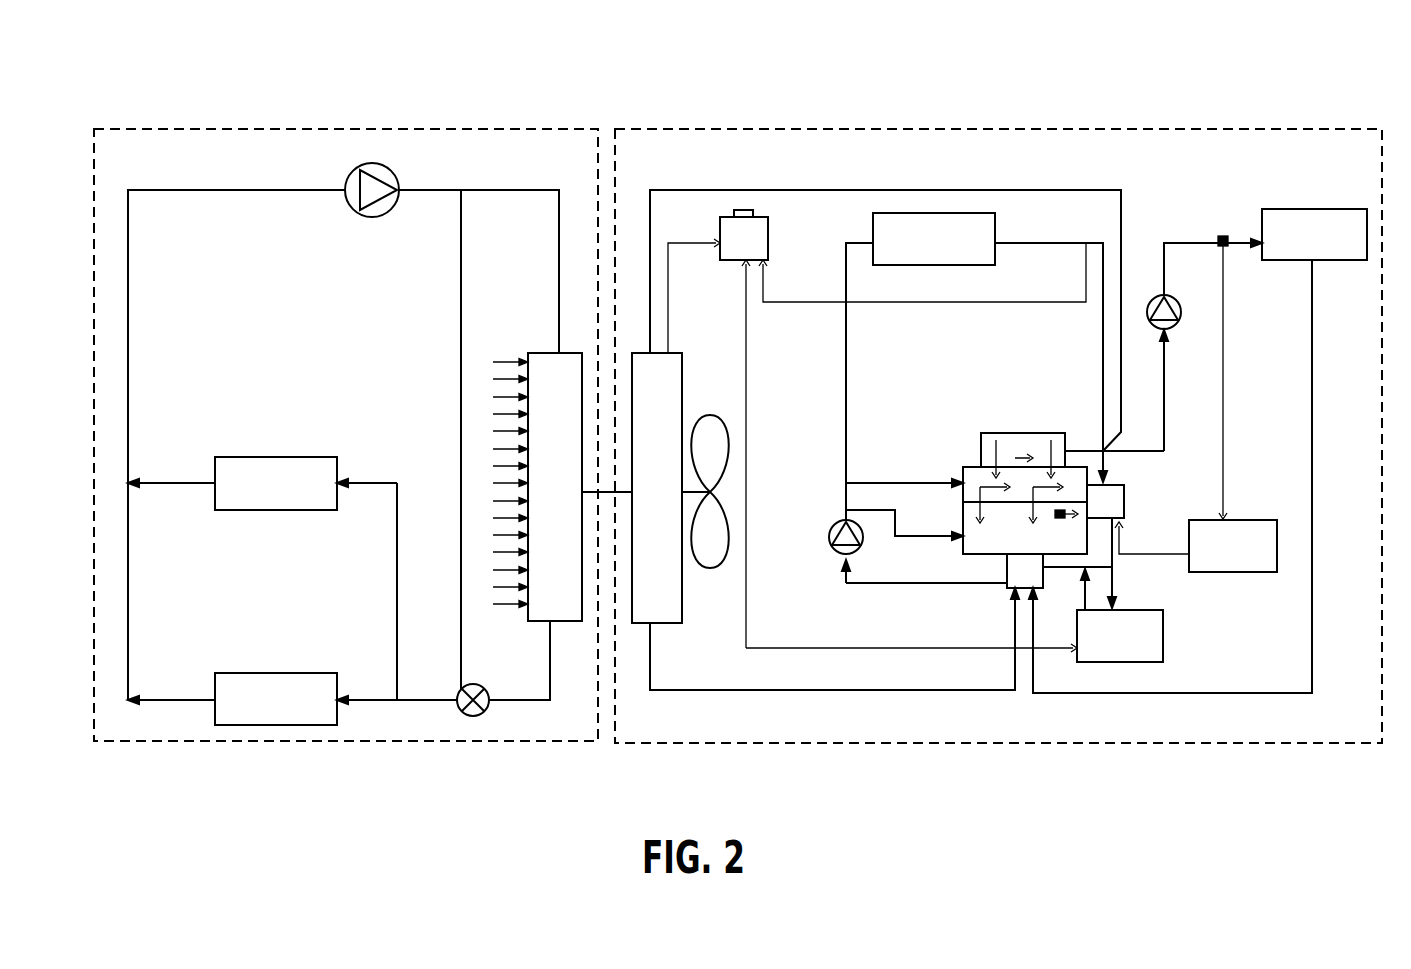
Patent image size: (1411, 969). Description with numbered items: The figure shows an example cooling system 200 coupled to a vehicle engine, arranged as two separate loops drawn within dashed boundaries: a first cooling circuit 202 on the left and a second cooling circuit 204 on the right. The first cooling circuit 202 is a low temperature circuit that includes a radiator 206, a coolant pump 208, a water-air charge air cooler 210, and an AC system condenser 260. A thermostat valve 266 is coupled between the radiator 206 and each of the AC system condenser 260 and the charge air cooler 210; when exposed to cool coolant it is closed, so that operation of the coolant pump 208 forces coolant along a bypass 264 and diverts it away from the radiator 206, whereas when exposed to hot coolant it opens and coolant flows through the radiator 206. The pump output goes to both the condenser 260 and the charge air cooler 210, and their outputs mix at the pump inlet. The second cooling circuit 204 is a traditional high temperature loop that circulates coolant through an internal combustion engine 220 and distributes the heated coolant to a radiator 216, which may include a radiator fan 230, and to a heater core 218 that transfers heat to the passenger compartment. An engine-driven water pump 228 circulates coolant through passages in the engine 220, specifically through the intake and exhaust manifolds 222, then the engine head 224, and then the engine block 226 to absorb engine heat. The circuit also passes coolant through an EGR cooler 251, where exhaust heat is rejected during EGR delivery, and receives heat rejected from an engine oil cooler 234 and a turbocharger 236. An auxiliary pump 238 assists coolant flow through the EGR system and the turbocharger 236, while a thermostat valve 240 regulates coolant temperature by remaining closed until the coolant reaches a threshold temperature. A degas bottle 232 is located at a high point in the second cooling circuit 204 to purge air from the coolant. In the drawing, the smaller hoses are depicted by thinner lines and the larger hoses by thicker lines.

The cooling system 200 is at (1326, 56).
The first cooling circuit 202 is at (422, 128).
The second cooling circuit 204 is at (905, 128).
The radiator 206 is at (571, 498).
The coolant pump 208 is at (397, 170).
The water-air charge air cooler 210 is at (292, 494).
The radiator 216 is at (673, 503).
The heater core 218 is at (1329, 247).
The internal combustion engine 220 is at (1018, 505).
The intake and exhaust manifolds 222 is at (981, 450).
The engine head 224 is at (963, 474).
The engine block 226 is at (963, 526).
The engine-driven water pump 228 is at (829, 536).
The radiator fan 230 is at (707, 415).
The degas bottle 232 is at (768, 233).
The engine oil cooler 234 is at (1136, 647).
The turbocharger 236 is at (1249, 557).
The auxiliary pump 238 is at (1171, 295).
The thermostat valve 240 is at (1007, 588).
The EGR cooler 251 is at (949, 250).
The AC system condenser 260 is at (292, 710).
The bypass 264 is at (462, 337).
The thermostat valve 266 is at (477, 686).